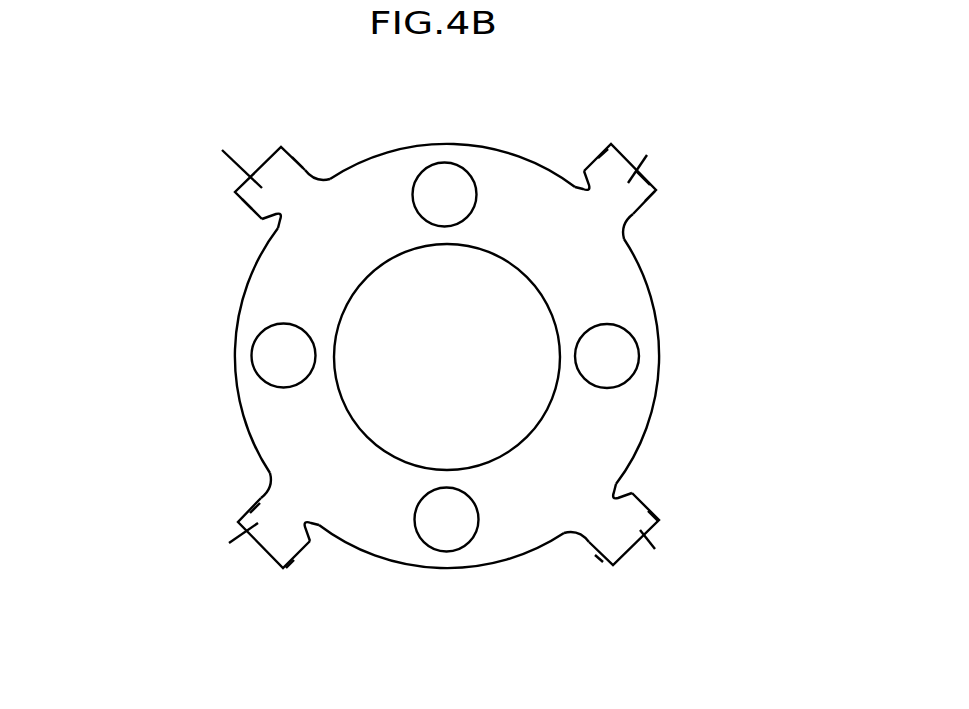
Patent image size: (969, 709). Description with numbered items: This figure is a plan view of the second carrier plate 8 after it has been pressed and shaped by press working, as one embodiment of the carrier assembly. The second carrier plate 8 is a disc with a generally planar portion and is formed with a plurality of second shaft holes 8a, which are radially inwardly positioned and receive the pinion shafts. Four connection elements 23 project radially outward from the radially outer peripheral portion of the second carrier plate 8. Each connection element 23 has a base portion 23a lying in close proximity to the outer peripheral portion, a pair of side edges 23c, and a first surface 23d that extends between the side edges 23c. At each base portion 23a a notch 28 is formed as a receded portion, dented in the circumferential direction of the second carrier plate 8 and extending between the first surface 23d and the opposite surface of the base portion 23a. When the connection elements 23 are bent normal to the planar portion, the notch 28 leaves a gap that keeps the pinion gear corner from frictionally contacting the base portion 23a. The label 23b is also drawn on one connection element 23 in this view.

The second carrier plate 8 is at (659, 322).
The second shaft holes 8a is at (417, 206).
The connection elements 23 is at (263, 162).
The base portion 23a is at (628, 217).
The side edge of tab 23b is at (648, 180).
The side edges 23c is at (308, 163).
The first surface 23d is at (222, 150).
The notch 28 is at (272, 222).